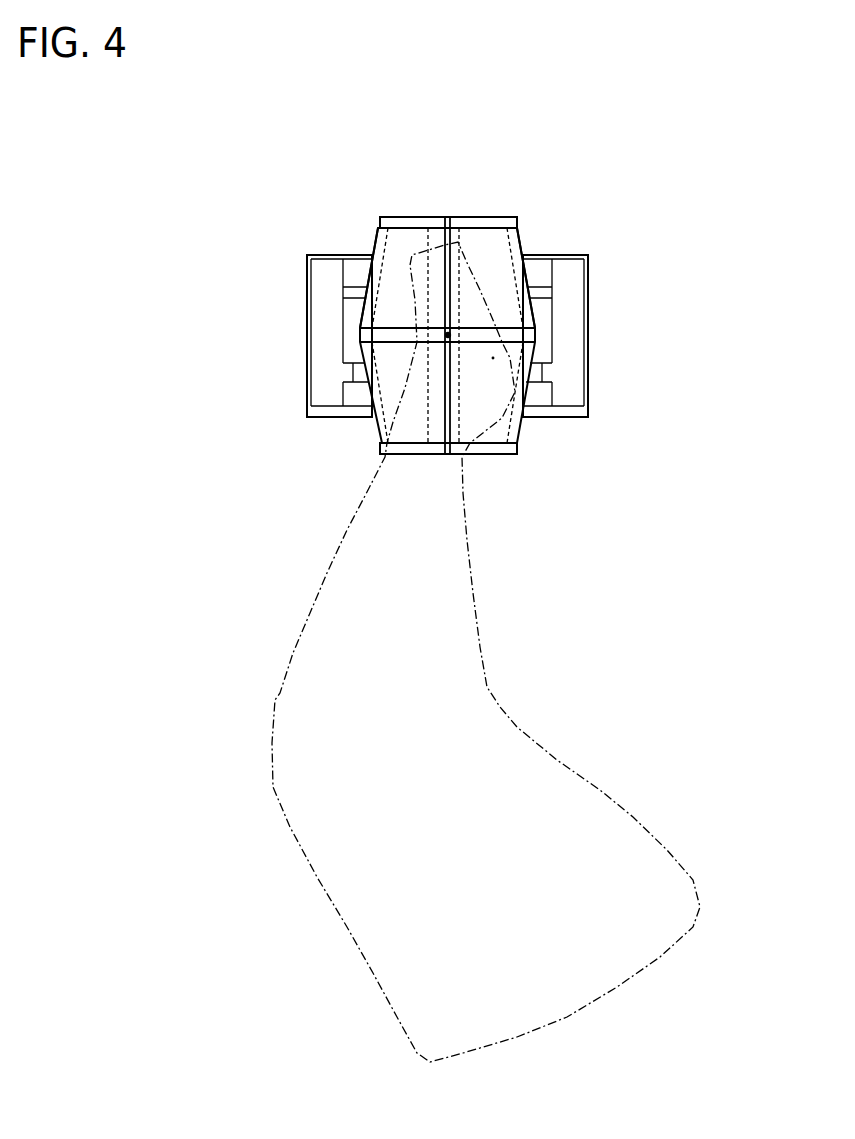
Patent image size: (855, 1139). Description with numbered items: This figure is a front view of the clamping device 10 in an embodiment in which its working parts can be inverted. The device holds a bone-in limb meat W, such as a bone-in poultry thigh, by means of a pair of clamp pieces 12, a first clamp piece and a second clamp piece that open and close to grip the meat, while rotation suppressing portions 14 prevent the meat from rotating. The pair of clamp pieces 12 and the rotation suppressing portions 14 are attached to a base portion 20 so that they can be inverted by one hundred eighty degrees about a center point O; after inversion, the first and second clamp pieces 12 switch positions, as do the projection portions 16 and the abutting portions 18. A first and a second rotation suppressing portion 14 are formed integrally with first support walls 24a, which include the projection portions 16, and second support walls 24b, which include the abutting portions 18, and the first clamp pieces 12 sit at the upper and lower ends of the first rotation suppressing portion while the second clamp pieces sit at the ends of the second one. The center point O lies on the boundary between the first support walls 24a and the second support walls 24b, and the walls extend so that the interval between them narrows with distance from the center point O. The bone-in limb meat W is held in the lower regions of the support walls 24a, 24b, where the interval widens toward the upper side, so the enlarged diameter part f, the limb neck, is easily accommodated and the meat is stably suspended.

The clamping device 10 is at (492, 98).
The clamp pieces 12 is at (398, 220).
The rotation suppressing portions 14 is at (363, 278).
The projection portion 16 is at (481, 250).
The abutting portion 18 is at (410, 248).
The base portion 20 is at (307, 318).
The first support walls 24a is at (367, 385).
The second support walls 24b is at (365, 308).
The center point O is at (452, 335).
The enlarged diameter part f is at (493, 358).
The bone-in limb meat W is at (317, 577).